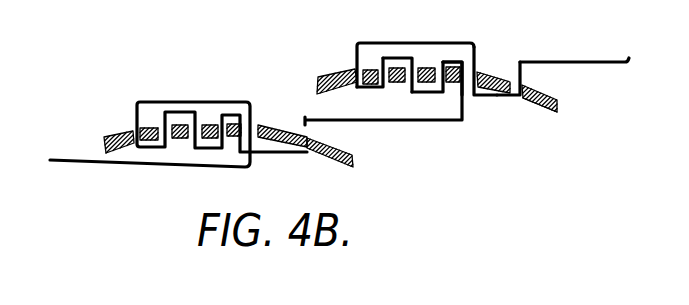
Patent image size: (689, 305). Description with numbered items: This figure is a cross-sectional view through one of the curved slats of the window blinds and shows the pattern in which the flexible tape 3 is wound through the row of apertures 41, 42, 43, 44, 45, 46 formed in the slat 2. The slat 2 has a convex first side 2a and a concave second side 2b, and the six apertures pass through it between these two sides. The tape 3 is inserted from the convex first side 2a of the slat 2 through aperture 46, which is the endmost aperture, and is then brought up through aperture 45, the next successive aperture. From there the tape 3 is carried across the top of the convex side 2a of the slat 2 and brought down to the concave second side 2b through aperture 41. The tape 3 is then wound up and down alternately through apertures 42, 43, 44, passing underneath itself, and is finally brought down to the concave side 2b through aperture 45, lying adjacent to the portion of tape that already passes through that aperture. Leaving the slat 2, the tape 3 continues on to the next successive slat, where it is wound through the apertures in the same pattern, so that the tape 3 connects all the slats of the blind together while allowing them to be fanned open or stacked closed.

The slat 2 is at (318, 80).
The convex first side 2a is at (550, 98).
The concave second side 2b is at (542, 111).
The tape 3 is at (594, 62).
The aperture 41 is at (343, 62).
The aperture 42 is at (382, 60).
The aperture 43 is at (420, 60).
The aperture 44 is at (447, 66).
The aperture 45 is at (476, 72).
The aperture 46 is at (512, 76).